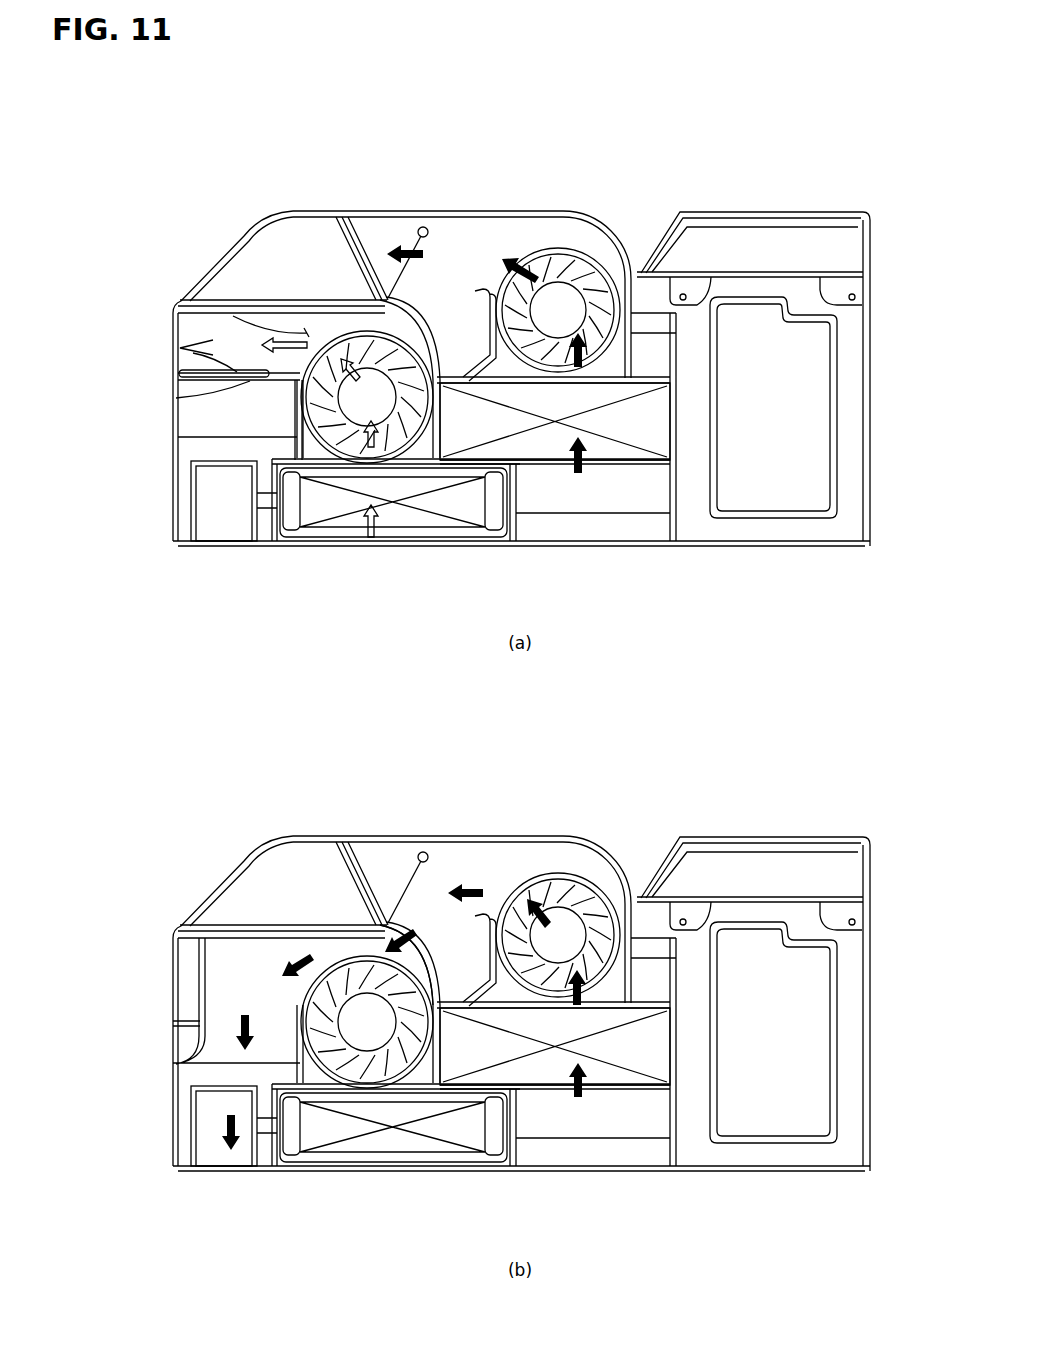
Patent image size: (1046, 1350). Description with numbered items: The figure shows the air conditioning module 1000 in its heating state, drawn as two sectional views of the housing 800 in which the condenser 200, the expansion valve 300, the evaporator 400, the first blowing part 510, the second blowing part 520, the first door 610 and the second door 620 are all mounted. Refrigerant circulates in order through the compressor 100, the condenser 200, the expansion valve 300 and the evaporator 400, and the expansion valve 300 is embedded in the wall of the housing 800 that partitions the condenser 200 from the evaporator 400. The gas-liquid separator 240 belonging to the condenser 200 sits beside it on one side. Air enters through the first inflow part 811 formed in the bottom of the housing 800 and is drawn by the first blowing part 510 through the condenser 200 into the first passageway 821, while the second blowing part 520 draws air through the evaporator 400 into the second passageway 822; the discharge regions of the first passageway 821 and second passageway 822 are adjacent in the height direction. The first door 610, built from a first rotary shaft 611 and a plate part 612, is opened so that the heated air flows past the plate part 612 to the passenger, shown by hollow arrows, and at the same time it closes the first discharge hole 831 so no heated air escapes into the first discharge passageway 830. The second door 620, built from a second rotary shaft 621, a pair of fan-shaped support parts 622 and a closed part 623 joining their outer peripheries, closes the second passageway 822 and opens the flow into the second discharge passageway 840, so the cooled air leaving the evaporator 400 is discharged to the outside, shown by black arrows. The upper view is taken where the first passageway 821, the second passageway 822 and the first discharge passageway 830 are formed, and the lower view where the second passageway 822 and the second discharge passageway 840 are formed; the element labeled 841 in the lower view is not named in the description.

The air conditioning module 1000 is at (698, 126).
The compressor 100 is at (773, 495).
The condenser 200 is at (332, 530).
The gas-liquid separator 240 is at (203, 524).
The expansion valve 300 is at (423, 457).
The evaporator 400 is at (617, 463).
The first blowing part 510 is at (362, 343).
The second blowing part 520 is at (538, 248).
The first door 610 is at (165, 356).
The first rotary shaft 611 is at (176, 377).
The plate part 612 is at (178, 350).
The second door 620 is at (348, 158).
The second rotary shaft 621 is at (428, 230).
The support part 622 is at (390, 233).
The closed part 623 is at (352, 213).
The housing 800 is at (593, 228).
The first inflow part 811 is at (443, 541).
The first passageway 821 is at (243, 328).
The second passageway 822 is at (277, 247).
The first discharge passageway 830 is at (220, 443).
The first discharge hole 831 is at (176, 398).
The second discharge passageway 840 is at (243, 1012).
The discharge guide 841 is at (423, 947).